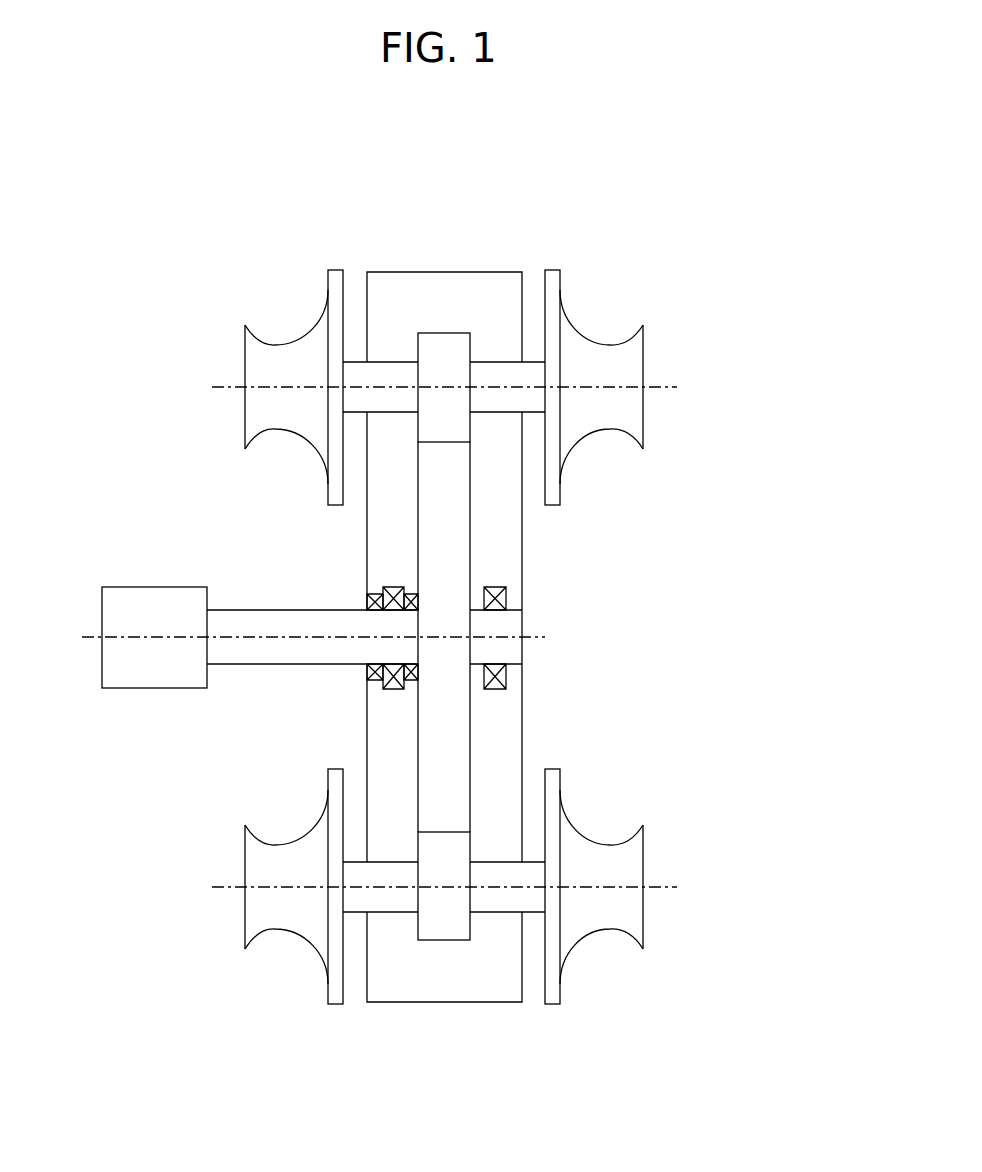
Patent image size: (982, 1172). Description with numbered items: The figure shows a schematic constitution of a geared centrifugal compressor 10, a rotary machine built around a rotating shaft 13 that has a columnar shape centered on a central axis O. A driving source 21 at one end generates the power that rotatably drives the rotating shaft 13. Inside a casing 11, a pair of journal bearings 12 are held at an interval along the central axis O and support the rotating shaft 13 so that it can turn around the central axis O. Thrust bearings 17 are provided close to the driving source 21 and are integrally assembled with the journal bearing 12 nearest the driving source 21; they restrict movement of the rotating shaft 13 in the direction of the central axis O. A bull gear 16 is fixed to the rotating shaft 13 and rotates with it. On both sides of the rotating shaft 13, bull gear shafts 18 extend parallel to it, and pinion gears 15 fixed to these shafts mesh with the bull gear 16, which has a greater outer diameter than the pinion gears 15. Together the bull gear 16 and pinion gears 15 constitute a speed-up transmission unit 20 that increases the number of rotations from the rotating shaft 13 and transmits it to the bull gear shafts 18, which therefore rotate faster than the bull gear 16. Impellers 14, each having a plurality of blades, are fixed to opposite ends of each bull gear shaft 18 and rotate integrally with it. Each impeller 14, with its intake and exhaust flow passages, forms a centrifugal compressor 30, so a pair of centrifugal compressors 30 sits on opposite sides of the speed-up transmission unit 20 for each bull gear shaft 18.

The geared centrifugal compressor 10 is at (658, 218).
The casing 11 is at (447, 272).
The journal bearings 12 is at (507, 600).
The rotating shaft 13 is at (273, 610).
The impellers 14 is at (583, 330).
The pinion gears 15 is at (455, 333).
The bull gear 16 is at (470, 738).
The thrust bearings 17 is at (410, 587).
The bull gear shafts 18 is at (388, 358).
The speed-up transmission unit 20 is at (537, 537).
The driving source 21 is at (152, 587).
The centrifugal compressor 30 is at (658, 373).
The central axis O is at (543, 637).